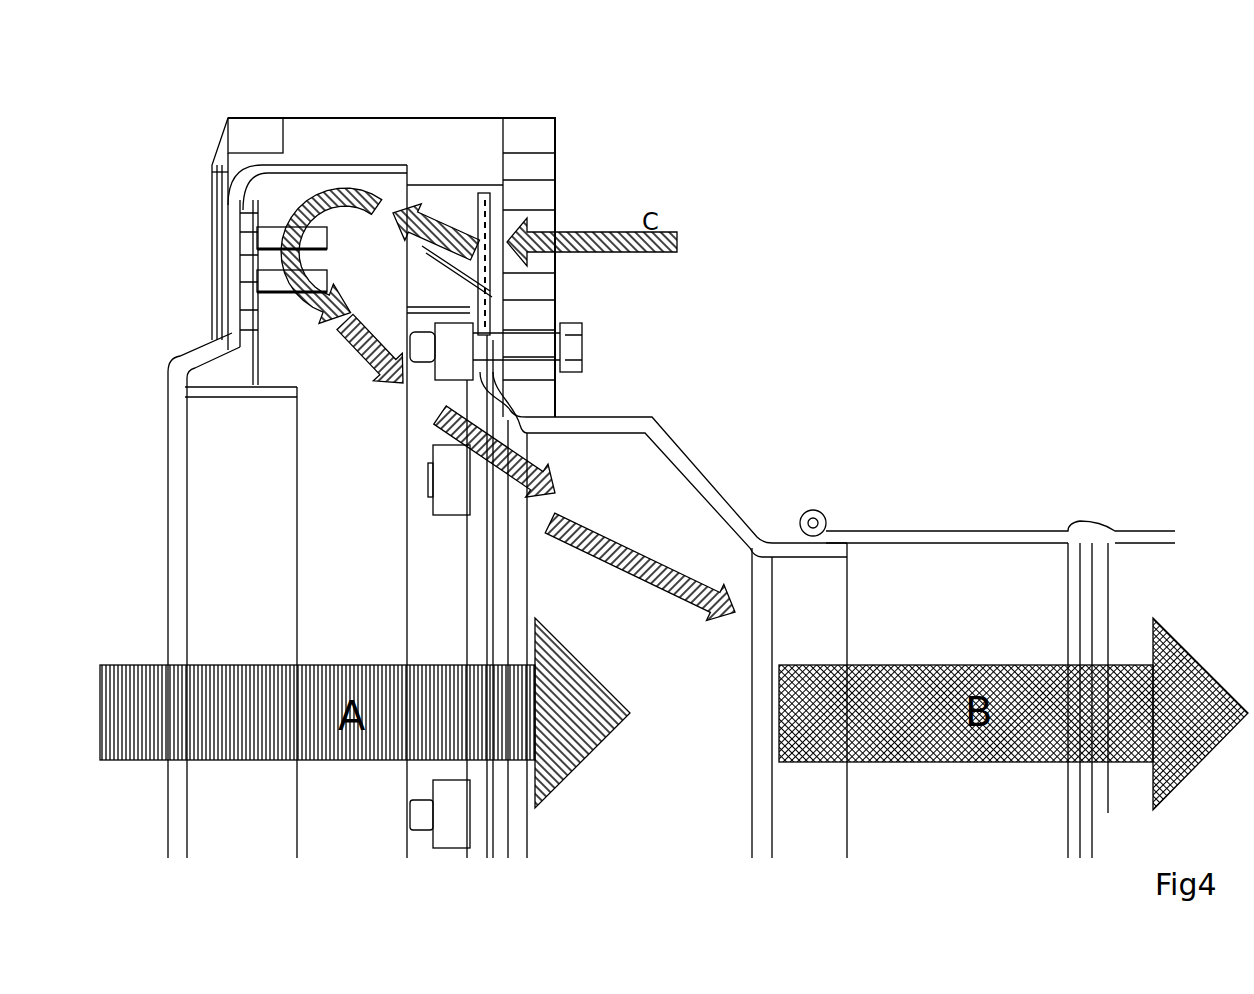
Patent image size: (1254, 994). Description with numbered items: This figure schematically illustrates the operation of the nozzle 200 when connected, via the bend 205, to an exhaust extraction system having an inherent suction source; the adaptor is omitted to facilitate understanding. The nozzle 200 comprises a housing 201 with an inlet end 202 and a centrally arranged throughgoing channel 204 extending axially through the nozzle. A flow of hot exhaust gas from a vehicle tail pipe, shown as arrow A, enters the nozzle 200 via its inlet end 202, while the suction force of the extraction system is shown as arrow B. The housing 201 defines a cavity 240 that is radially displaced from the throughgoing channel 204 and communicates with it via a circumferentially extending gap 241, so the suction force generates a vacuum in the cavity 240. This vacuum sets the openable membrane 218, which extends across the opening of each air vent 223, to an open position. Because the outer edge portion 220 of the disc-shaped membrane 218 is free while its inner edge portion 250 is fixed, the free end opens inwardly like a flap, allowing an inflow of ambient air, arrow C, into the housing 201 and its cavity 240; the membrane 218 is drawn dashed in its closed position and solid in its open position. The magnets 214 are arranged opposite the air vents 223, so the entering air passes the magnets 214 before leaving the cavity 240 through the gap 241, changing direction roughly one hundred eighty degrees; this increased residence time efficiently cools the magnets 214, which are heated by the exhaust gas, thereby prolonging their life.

The nozzle 200 is at (348, 845).
The housing 201 is at (478, 142).
The inlet end 202 is at (173, 365).
The throughgoing channel 204 is at (238, 560).
The bend 205 is at (972, 527).
The magnets 214 is at (259, 165).
The openable membrane 218 is at (442, 262).
The outer edge portion 220 is at (487, 195).
The air vents 223 is at (492, 205).
The cavity 240 is at (366, 247).
The gap 241 is at (307, 367).
The inner edge portion 250 is at (490, 330).